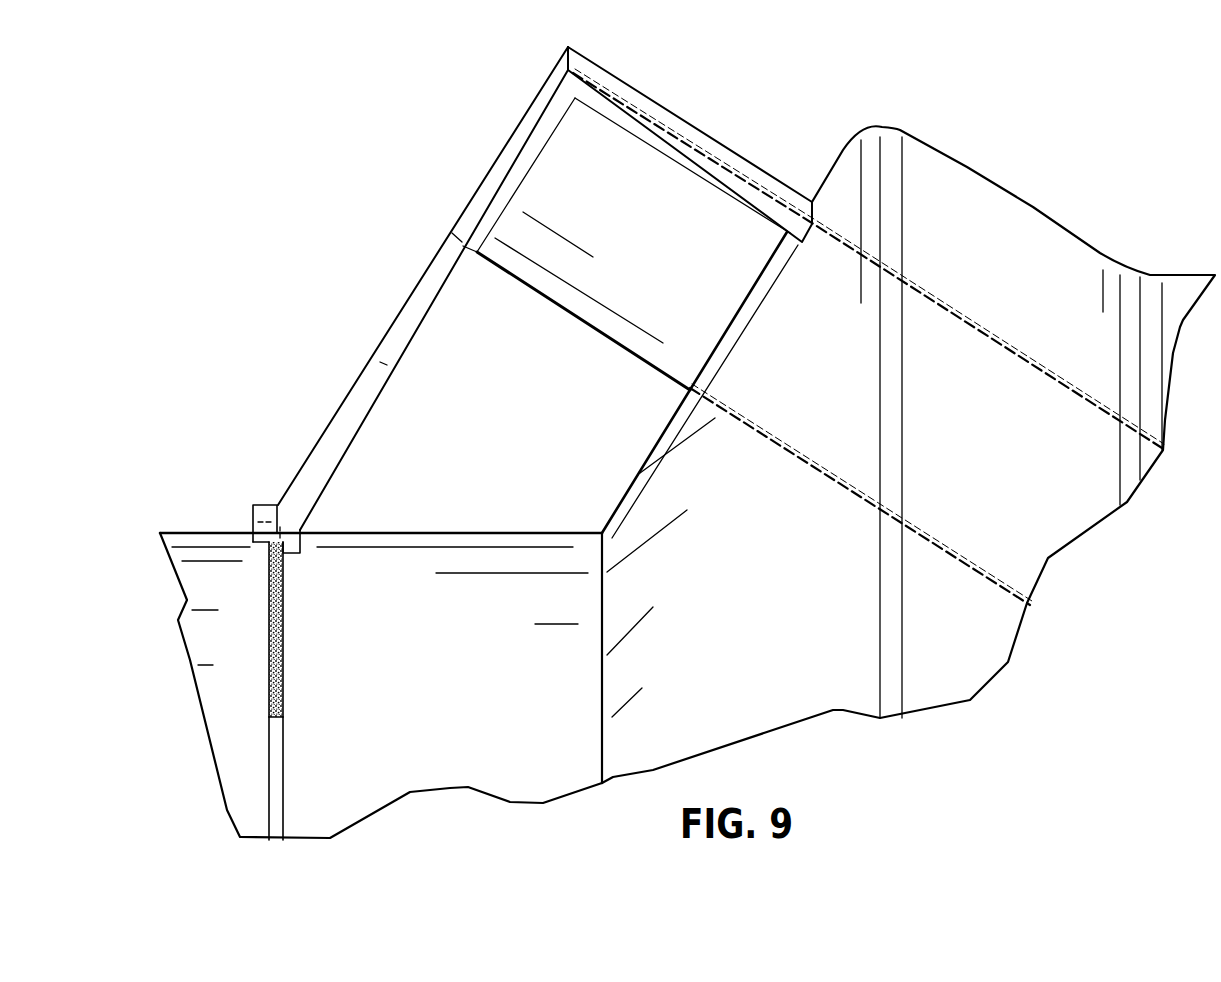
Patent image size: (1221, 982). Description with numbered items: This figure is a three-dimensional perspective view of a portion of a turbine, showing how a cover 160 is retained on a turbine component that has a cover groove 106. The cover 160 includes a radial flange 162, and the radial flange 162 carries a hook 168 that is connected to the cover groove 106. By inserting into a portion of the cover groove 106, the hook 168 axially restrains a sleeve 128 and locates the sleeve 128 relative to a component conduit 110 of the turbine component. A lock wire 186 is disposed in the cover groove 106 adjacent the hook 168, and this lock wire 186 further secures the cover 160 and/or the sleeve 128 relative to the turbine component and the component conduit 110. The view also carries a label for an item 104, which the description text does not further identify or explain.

The solar panel assembly 104 is at (427, 162).
The cover 160 is at (700, 140).
The radial flange 162 is at (385, 360).
The sleeve 128 is at (612, 297).
The component conduit 110 is at (920, 542).
The hook 168 is at (288, 527).
The lock wire 186 is at (273, 613).
The cover groove 106 is at (277, 757).